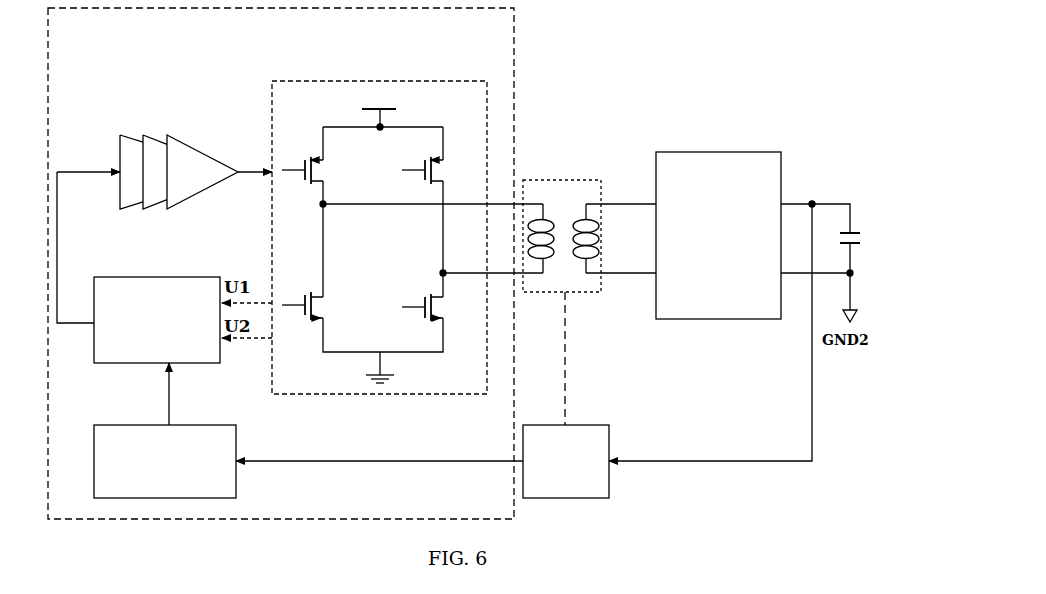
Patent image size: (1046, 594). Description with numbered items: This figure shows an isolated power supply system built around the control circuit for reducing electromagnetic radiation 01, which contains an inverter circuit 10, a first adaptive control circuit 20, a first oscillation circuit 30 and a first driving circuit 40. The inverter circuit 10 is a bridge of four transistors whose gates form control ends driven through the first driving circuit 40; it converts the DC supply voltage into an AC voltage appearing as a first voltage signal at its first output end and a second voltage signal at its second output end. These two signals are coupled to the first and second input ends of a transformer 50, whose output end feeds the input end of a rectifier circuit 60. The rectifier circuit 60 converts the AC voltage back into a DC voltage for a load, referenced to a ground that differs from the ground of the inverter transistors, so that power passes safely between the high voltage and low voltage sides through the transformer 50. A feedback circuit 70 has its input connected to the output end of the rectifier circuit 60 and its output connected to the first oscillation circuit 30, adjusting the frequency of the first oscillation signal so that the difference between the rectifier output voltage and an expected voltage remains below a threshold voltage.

The control circuit for reducing electromagnetic radiation 01 is at (515, 92).
The inverter circuit 10 is at (486, 81).
The first adaptive control circuit 20 is at (112, 363).
The first oscillation circuit 30 is at (240, 450).
The first driving circuit 40 is at (150, 133).
The transformer 50 is at (602, 182).
The rectifier circuit 60 is at (738, 152).
The feedback circuit 70 is at (595, 423).